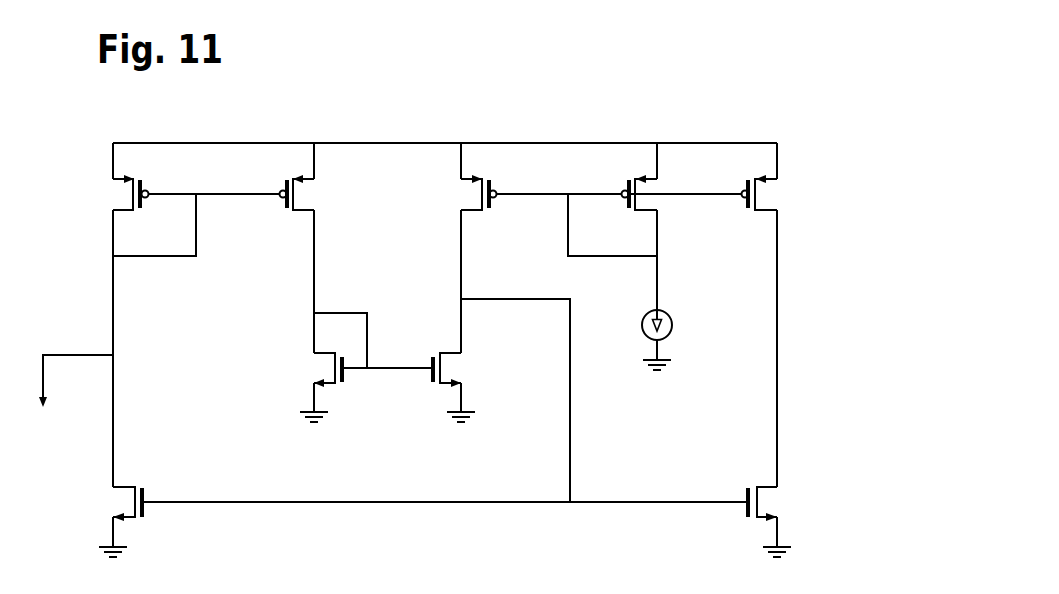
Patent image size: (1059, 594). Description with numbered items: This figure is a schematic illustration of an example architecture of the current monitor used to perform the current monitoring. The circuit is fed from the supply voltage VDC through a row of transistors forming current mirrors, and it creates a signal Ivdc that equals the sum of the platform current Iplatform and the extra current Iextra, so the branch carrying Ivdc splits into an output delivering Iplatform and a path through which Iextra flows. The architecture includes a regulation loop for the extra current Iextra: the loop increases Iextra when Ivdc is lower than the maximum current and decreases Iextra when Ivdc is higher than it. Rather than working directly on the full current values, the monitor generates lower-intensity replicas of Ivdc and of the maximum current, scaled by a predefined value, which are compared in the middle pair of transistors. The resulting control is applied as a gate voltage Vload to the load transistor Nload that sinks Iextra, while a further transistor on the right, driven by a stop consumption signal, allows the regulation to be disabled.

The supply voltage VDC is at (445, 141).
The signal Ivdc is at (109, 299).
The platform current Iplatform is at (59, 349).
The extra current Iextra is at (109, 435).
The load transistor Nload is at (87, 515).
The load gate voltage line Vload is at (445, 487).